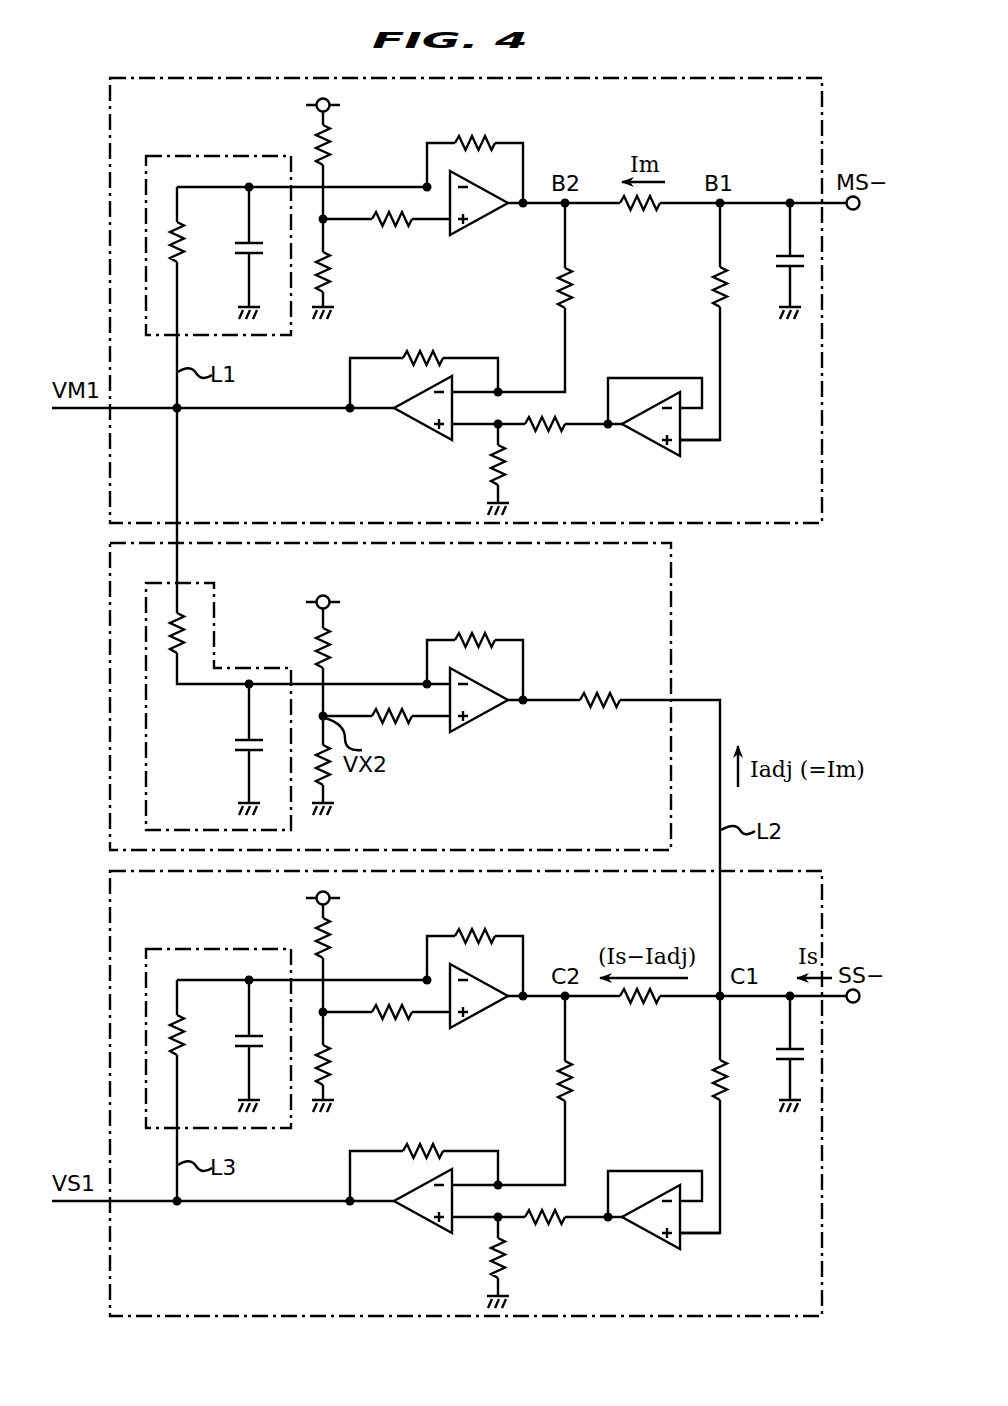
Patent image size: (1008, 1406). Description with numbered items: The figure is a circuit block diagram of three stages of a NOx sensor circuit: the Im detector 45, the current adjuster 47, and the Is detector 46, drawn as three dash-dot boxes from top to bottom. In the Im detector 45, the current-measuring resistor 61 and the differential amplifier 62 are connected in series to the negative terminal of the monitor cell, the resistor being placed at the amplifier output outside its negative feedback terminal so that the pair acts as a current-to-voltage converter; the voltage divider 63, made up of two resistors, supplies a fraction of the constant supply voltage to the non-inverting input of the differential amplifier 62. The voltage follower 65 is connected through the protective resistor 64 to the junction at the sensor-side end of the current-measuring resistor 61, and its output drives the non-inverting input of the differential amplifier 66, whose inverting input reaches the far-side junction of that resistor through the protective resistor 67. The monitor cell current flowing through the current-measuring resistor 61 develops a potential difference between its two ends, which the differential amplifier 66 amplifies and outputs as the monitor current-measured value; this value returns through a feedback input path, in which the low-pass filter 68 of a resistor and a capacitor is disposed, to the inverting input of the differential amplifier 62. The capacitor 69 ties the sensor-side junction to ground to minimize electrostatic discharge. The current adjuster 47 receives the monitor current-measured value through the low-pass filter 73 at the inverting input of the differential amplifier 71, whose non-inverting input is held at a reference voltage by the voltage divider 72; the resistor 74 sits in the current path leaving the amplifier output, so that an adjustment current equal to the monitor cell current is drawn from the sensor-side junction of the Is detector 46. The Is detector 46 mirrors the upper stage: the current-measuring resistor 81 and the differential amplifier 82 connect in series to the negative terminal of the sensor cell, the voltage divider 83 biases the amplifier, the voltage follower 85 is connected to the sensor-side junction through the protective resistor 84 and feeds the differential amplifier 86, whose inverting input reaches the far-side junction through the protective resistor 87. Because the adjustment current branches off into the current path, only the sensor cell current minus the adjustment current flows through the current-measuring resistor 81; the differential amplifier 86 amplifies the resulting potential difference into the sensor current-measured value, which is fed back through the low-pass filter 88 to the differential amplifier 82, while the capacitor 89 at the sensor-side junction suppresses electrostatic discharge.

The Im detector 45 is at (825, 125).
The Is detector 46 is at (488, 1093).
The current adjuster 47 is at (673, 611).
The current-measuring resistor 61 is at (643, 216).
The differential amplifier 62 is at (485, 238).
The voltage divider 63 is at (299, 150).
The protective resistor 64 is at (717, 293).
The voltage follower 65 is at (648, 441).
The differential amplifier 66 is at (406, 440).
The protective resistor 67 is at (569, 290).
The low-pass filter 68 is at (178, 156).
The capacitor 69 is at (786, 275).
The differential amplifier 71 is at (485, 733).
The voltage divider 72 is at (301, 651).
The low-pass filter 73 is at (213, 583).
The resistor 74 is at (600, 704).
The current-measuring resistor 81 is at (641, 1024).
The differential amplifier 82 is at (494, 1009).
The voltage divider 83 is at (342, 999).
The protective resistor 84 is at (698, 1113).
The voltage follower 85 is at (622, 1219).
The differential amplifier 86 is at (288, 1226).
The protective resistor 87 is at (568, 1090).
The low-pass filter 88 is at (284, 1044).
The capacitor 89 is at (783, 1054).